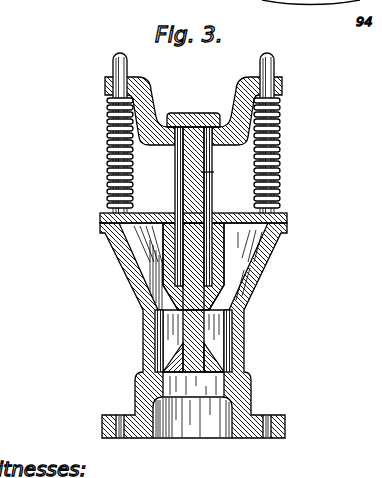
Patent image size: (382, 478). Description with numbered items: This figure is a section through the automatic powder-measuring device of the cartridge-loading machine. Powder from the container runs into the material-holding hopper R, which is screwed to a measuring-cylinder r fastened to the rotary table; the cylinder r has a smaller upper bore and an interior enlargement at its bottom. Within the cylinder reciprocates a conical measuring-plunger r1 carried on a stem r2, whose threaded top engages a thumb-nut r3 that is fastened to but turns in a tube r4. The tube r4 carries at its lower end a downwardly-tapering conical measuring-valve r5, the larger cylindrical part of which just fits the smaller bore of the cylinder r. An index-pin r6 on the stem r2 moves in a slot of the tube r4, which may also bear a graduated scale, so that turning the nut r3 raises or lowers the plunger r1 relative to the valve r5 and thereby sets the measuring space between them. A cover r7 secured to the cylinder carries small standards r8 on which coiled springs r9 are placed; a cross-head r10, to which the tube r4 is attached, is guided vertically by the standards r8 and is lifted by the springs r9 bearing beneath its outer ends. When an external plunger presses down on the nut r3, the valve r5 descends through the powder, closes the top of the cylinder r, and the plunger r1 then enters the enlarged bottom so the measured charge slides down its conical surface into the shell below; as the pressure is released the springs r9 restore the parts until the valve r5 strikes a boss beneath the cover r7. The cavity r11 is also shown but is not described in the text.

The material-holding hopper R is at (122, 254).
The measuring-cylinder r is at (166, 332).
The conical measuring-plunger r1 is at (212, 372).
The stem r2 is at (199, 325).
The thumb-nut r3 is at (204, 115).
The tube r4 is at (177, 163).
The conical measuring-valve r5 is at (137, 295).
The index-pin r6 is at (214, 172).
The cover r7 is at (193, 209).
The standards r8 is at (118, 56).
The coiled springs r9 is at (110, 126).
The cross-head r10 is at (156, 100).
The cavity r11 is at (219, 242).